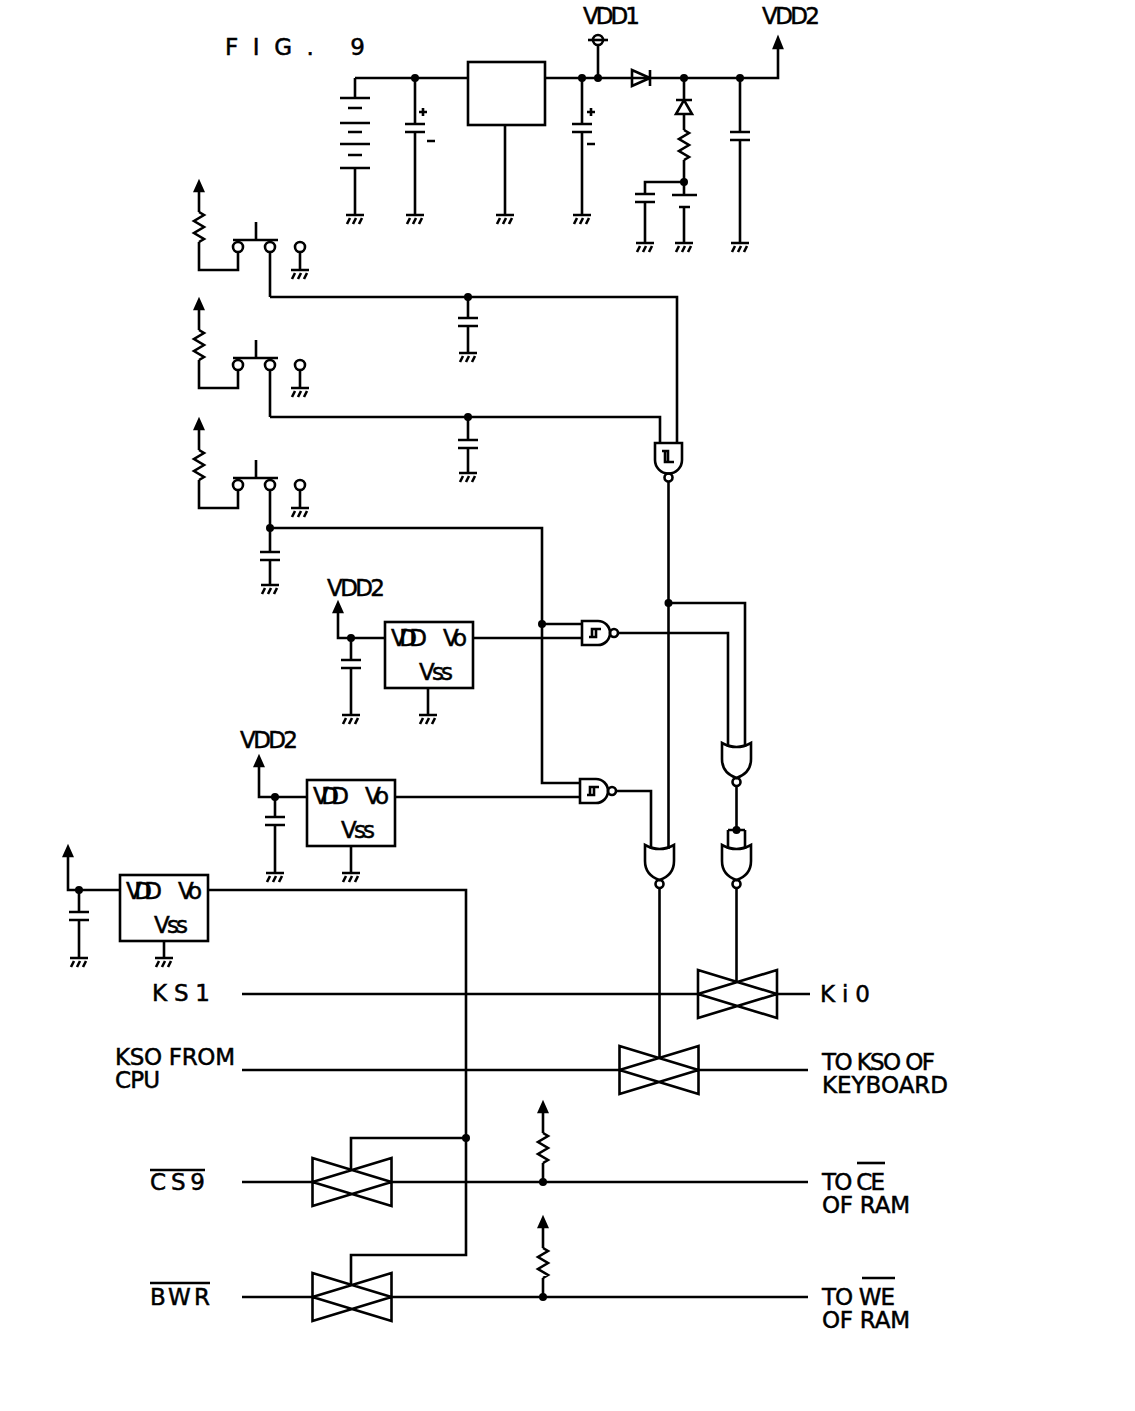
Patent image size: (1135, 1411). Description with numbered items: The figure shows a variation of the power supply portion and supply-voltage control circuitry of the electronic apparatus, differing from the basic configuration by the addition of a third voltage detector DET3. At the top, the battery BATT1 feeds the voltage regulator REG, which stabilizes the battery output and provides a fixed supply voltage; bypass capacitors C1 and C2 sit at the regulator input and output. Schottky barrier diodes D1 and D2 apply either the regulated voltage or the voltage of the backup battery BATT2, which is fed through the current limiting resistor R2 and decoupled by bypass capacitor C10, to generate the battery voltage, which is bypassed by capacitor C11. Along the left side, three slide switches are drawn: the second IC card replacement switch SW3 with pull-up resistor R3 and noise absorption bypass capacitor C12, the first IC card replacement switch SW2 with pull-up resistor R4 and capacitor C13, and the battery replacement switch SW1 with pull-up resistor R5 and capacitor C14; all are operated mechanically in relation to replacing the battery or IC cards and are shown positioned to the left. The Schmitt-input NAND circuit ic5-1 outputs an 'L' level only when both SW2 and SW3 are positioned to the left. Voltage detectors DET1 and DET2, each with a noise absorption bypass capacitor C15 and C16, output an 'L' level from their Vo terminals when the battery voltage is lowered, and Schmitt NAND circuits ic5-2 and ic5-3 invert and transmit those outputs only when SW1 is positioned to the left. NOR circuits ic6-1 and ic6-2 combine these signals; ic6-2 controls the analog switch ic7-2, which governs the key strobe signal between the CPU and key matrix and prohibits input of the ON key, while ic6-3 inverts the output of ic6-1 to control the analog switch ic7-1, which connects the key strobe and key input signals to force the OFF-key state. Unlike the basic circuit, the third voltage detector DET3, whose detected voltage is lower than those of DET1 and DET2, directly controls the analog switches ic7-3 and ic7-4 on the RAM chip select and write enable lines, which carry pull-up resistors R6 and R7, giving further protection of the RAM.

The battery BATT1 is at (312, 151).
The bypass capacitor C1 is at (433, 151).
The voltage regulator REG is at (506, 126).
The Schottky barrier diode D1 is at (638, 61).
The bypass capacitor C2 is at (603, 151).
The Schottky barrier diode D2 is at (703, 104).
The current limiting resistor R2 is at (702, 156).
The backup battery BATT2 is at (699, 205).
The bypass capacitor C10 is at (638, 217).
The bypass capacitor C11 is at (762, 165).
The pull-up resistor R3 is at (197, 226).
The IC card 2 replacement switch SW3 is at (268, 230).
The noise absorption bypass capacitor C12 is at (491, 329).
The pull-up resistor R4 is at (197, 344).
The IC card 1 replacement switch SW2 is at (268, 348).
The noise absorption bypass capacitor C13 is at (491, 449).
The pull-up resistor R5 is at (197, 464).
The battery replacement switch SW1 is at (268, 468).
The noise absorption bypass capacitor C14 is at (292, 561).
The Schmitt-input NAND circuit ic5-1 is at (702, 462).
The noise absorption bypass capacitor C15 is at (329, 681).
The voltage detector DET1 is at (429, 658).
The Schmitt-input NAND circuit ic5-2 is at (597, 617).
The noise absorption bypass capacitor C16 is at (251, 839).
The voltage detector DET2 is at (351, 815).
The Schmitt-input NAND circuit ic5-3 is at (597, 776).
The third voltage detector DET3 is at (164, 906).
The NOR circuit ic6-1 is at (771, 764).
The NOR circuit ic6-2 is at (624, 866).
The NOR circuit ic6-3 is at (771, 866).
The analog switch ic7-1 is at (759, 980).
The analog switch ic7-2 is at (695, 1063).
The analog switch ic7-3 is at (326, 1165).
The analog switch ic7-4 is at (326, 1282).
The pull-up resistor R6 is at (561, 1142).
The pull-up resistor R7 is at (561, 1257).